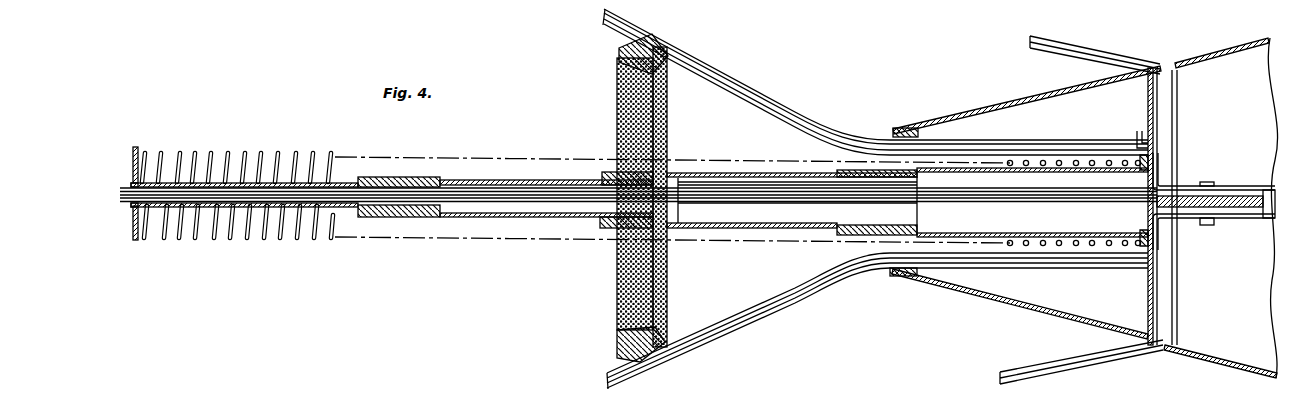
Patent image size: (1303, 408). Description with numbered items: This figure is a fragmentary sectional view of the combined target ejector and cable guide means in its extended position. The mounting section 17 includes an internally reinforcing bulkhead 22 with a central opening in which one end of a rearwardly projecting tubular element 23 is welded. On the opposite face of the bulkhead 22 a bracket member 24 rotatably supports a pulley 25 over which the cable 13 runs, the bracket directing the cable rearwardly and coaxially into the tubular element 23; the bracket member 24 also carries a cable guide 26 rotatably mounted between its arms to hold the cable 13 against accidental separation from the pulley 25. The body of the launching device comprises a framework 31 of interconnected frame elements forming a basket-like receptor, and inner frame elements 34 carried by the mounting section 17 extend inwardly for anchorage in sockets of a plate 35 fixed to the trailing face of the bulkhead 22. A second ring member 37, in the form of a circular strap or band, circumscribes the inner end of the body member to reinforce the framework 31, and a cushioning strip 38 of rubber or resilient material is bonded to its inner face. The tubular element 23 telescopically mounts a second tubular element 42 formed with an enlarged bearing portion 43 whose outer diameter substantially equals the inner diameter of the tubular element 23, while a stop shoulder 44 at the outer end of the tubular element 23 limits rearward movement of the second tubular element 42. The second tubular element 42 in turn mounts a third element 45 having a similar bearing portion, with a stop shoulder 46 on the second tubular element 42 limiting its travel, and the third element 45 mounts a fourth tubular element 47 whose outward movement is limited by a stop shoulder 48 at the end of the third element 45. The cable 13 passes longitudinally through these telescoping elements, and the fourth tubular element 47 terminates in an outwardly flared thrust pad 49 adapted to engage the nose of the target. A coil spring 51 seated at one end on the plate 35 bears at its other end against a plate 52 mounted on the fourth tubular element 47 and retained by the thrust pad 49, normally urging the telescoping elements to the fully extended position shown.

The cable 13 is at (540, 201).
The mounting section 17 is at (1012, 106).
The bulkhead 22 is at (1158, 307).
The tubular element 23 is at (984, 168).
The bracket member 24 is at (1186, 189).
The pulley 25 is at (1228, 196).
The cable guide 26 is at (1262, 217).
The framework 31 is at (767, 305).
The inner frame element 34 is at (814, 118).
The plate 35 is at (1140, 136).
The second ring member 37 is at (660, 50).
The cushioning strip 38 is at (622, 52).
The second tubular element 42 is at (722, 173).
The bearing portion 43 is at (916, 232).
The stop shoulder 44 is at (836, 232).
The third element 45 is at (492, 179).
The stop shoulder 46 is at (606, 229).
The fourth tubular element 47 is at (358, 178).
The stop shoulder 48 is at (386, 218).
The thrust pad 49 is at (133, 208).
The coil spring 51 is at (264, 236).
The plate 52 is at (138, 150).